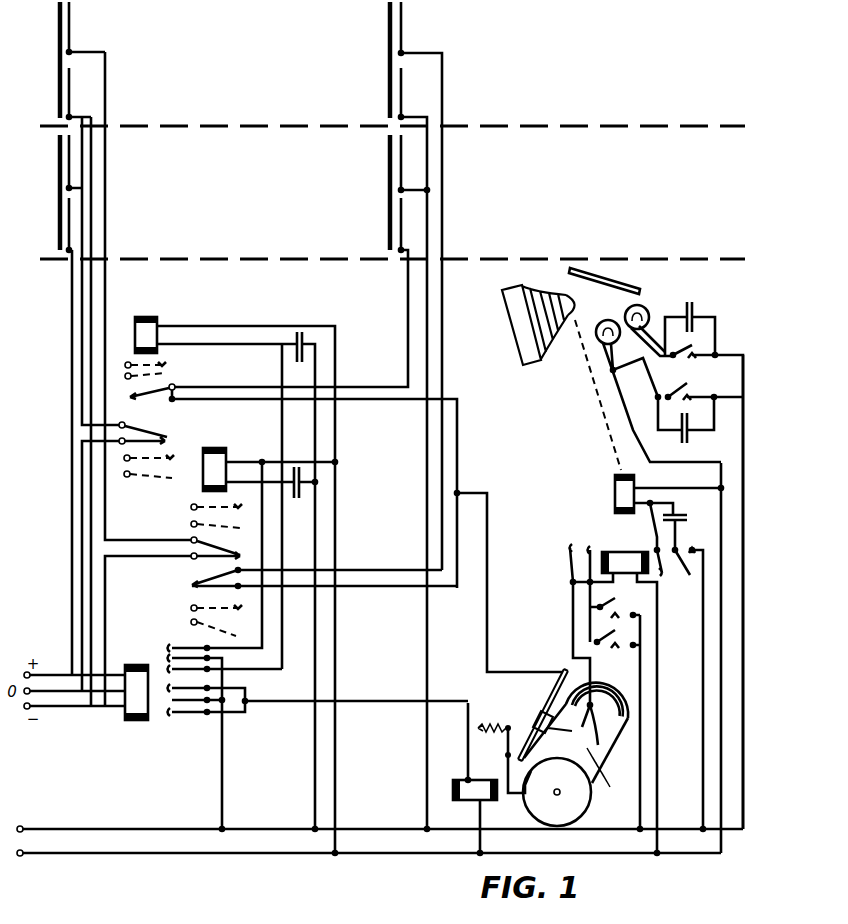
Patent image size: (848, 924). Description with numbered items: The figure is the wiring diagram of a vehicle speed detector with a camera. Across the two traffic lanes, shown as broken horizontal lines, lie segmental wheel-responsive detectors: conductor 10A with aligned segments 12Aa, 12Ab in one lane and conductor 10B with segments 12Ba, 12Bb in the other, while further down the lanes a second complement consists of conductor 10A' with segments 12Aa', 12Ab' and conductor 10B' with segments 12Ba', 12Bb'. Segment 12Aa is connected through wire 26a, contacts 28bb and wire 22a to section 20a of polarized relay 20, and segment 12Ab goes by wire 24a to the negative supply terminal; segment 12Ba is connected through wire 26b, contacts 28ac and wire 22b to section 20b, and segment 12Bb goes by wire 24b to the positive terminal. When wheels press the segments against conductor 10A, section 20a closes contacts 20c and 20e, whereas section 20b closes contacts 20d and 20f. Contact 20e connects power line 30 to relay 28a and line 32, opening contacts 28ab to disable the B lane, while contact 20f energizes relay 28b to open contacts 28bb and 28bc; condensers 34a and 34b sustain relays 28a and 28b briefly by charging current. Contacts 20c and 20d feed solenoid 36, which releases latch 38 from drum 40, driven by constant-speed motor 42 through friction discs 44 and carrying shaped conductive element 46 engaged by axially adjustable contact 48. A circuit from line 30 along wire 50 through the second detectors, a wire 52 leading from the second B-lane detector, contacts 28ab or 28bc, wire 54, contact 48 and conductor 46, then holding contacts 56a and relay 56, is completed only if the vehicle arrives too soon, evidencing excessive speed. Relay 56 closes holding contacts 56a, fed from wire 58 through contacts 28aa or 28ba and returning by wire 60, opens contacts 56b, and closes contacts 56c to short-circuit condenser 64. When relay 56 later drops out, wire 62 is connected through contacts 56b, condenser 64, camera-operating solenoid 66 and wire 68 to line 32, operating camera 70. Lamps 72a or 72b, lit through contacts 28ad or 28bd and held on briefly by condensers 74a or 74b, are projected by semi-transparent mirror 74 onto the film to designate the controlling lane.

The conductor 10A is at (36, 60).
The conductor 10B is at (36, 192).
The conductor 10A' is at (360, 60).
The conductor 10B' is at (356, 192).
The segmental conductor 12Aa is at (102, 28).
The segmental conductor 12Ab is at (118, 93).
The segmental conductor 12Ba is at (118, 163).
The segmental conductor 12Bb is at (118, 225).
The segmental conductor 12Aa' is at (435, 286).
The segmental conductor 12Ab' is at (456, 448).
The segmental conductor 12Ba' is at (454, 164).
The segmental conductor 12Bb' is at (455, 245).
The polarized relay 20 is at (125, 722).
The relay section 20a is at (149, 722).
The relay section 20b is at (125, 665).
The relay contact 20c is at (185, 712).
The relay contact 20d is at (230, 694).
The relay contact 20e is at (170, 702).
The relay contact 20f is at (167, 657).
The wire 22a is at (105, 635).
The wire 22b is at (82, 495).
The wire 24a is at (91, 606).
The wire 24b is at (72, 326).
The wire 26a is at (105, 517).
The wire 26b is at (82, 380).
The relay 28a is at (160, 317).
The relay contacts 28aa is at (177, 370).
The relay contacts 28ab is at (180, 386).
The relay contacts 28ac is at (172, 435).
The relay contacts 28ad is at (177, 473).
The relay 28b is at (225, 449).
The relay contacts 28ba is at (193, 515).
The relay contacts 28bb is at (185, 555).
The relay contacts 28bc is at (190, 585).
The relay contacts 28bd is at (192, 612).
The power line 30 is at (140, 827).
The power line 32 is at (140, 853).
The condenser 34a is at (300, 366).
The condenser 34b is at (298, 502).
The solenoid 36 is at (463, 780).
The latch 38 is at (522, 795).
The drum 40 is at (557, 826).
The constant-speed motor 42 is at (625, 692).
The friction discs 44 is at (628, 735).
The conductive element 46 is at (606, 772).
The axially adjustable contact 48 is at (548, 700).
The wire 50 is at (460, 640).
The conductor 52 is at (405, 292).
The wire 54 is at (490, 518).
The relay 56 is at (620, 552).
The holding contacts 56a is at (583, 545).
The relay contacts 56b is at (685, 548).
The relay contacts 56c is at (676, 585).
The wire 58 is at (640, 767).
The wire 60 is at (657, 815).
The wire 62 is at (707, 630).
The condenser 64 is at (690, 513).
The camera-operating solenoid 66 is at (612, 490).
The wire 68 is at (683, 492).
The camera 70 is at (515, 333).
The lamp 72a is at (592, 340).
The lamp 72b is at (645, 310).
The semi-transparent mirror 74 is at (608, 283).
The condenser 74a is at (692, 300).
The condenser 74b is at (685, 446).